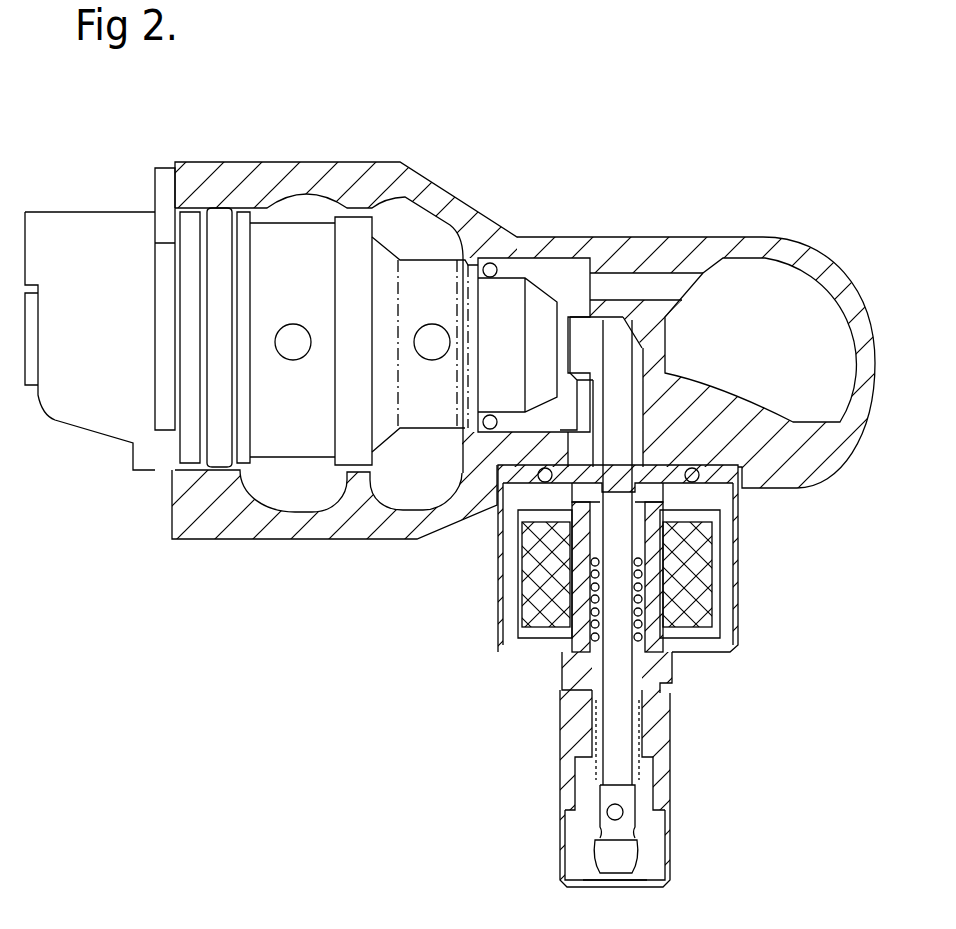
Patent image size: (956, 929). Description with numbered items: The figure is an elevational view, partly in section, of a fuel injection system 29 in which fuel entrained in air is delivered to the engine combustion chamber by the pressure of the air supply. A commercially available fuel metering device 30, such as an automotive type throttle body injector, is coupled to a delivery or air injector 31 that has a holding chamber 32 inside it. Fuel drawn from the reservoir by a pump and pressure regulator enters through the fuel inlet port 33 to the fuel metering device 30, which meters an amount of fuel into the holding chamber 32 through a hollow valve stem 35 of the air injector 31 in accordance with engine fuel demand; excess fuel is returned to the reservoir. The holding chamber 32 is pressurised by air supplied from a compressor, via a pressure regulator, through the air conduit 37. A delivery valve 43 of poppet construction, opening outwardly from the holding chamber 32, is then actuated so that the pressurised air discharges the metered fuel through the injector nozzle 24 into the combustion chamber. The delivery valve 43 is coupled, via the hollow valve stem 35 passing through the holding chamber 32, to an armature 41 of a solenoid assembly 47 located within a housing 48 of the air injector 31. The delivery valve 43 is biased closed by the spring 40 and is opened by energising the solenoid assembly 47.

The fuel injection system 29 is at (382, 583).
The fuel metering device 30 is at (352, 237).
The fuel inlet port 33 is at (432, 342).
The air conduit 37 is at (806, 351).
The housing 48 is at (507, 643).
The armature 41 is at (632, 515).
The solenoid assembly 47 is at (690, 597).
The spring 40 is at (640, 628).
The hollow valve stem 35 is at (613, 650).
The air injector 31 is at (668, 692).
The injector nozzle 24 is at (673, 745).
The holding chamber 32 is at (634, 832).
The delivery valve 43 is at (600, 868).